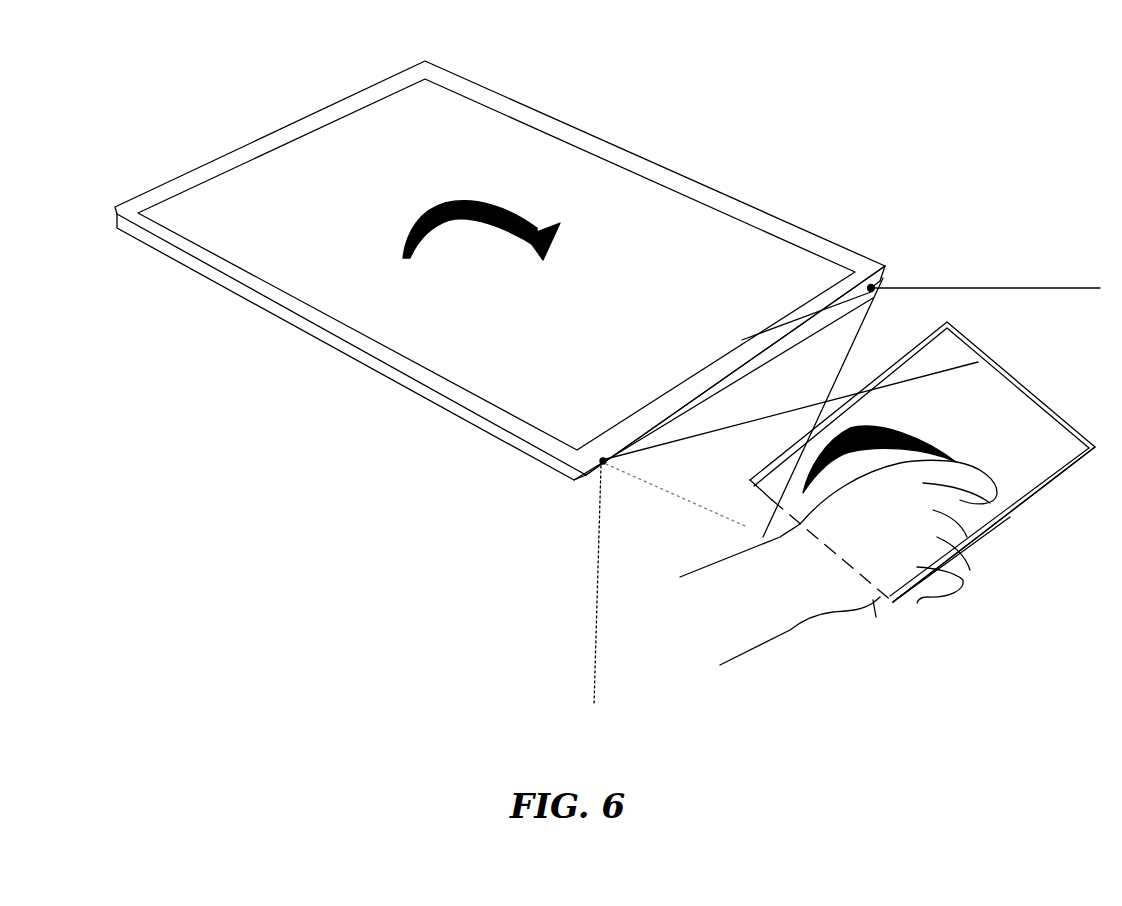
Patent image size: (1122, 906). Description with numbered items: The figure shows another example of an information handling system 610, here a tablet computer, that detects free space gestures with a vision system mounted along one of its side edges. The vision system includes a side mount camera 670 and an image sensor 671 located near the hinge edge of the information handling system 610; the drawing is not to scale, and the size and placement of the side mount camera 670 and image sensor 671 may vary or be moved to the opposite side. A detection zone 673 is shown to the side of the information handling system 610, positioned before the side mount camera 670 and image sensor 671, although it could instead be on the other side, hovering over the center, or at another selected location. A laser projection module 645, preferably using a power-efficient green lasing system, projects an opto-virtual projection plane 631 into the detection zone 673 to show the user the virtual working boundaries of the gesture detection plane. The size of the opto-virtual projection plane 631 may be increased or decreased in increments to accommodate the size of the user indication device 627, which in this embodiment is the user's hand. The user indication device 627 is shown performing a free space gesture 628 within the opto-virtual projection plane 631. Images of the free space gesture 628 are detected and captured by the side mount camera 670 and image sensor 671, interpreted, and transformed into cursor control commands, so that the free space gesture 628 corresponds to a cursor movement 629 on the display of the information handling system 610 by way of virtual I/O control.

The information handling system 610 is at (259, 108).
The cursor movement 629 is at (493, 180).
The laser projection module 645 is at (738, 367).
The side mount camera 670 is at (871, 285).
The image sensor 671 is at (601, 464).
The detection zone 673 is at (933, 372).
The opto-virtual projection plane 631 is at (762, 492).
The free space gesture 628 is at (955, 455).
The user indication device 627 is at (943, 587).